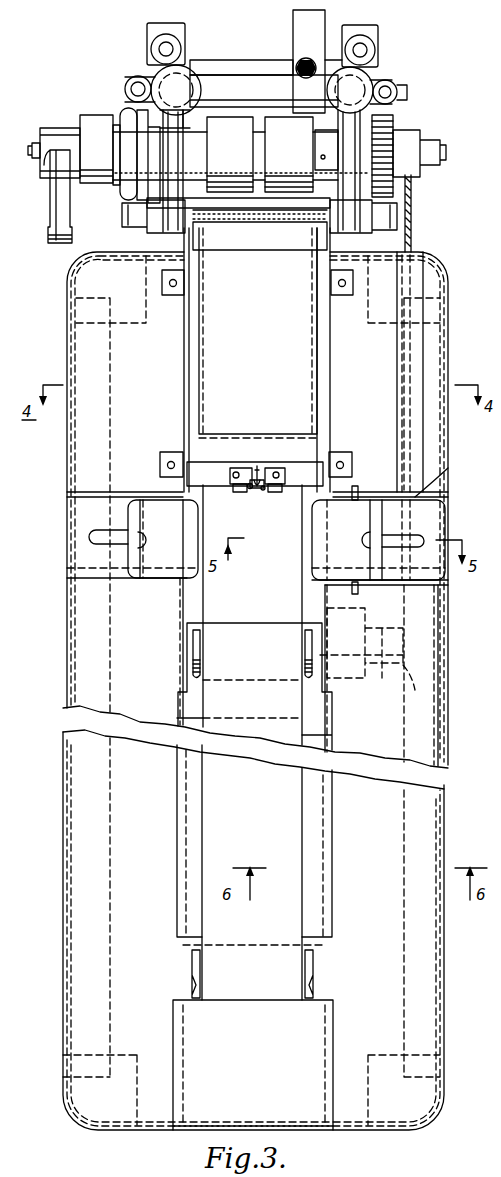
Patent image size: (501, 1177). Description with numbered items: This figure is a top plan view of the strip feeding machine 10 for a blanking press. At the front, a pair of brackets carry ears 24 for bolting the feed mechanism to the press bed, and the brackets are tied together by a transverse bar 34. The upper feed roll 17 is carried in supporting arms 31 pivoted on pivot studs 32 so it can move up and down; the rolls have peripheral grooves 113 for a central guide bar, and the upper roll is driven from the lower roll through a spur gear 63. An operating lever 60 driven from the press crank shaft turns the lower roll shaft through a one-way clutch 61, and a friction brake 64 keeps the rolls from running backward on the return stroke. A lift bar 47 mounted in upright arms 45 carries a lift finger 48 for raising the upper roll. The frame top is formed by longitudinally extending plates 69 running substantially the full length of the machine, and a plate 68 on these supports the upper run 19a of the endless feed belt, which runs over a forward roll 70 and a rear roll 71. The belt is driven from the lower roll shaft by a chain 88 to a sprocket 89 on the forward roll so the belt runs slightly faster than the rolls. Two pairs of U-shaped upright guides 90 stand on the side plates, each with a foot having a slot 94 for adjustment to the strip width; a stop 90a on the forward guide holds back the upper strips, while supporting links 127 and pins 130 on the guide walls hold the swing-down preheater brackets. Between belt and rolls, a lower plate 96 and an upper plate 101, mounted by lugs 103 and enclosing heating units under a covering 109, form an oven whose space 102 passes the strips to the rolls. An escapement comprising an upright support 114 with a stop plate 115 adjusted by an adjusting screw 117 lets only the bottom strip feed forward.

The housing 10 is at (61, 979).
The upper feed roll 17 is at (232, 118).
The upper run of the belt 19a is at (292, 818).
The ears or lugs 24 is at (146, 40).
The supporting arms 31 is at (186, 165).
The pivot studs 32 is at (120, 229).
The transverse bar 34 is at (262, 220).
The eccentric 45 is at (202, 92).
The lift bar 47 is at (214, 80).
The lift finger 48 is at (295, 38).
The operating lever 60 is at (52, 208).
The one-way clutch 61 is at (110, 192).
The spur gear 63 is at (395, 118).
The friction brake 64 is at (120, 158).
The plate 68 is at (188, 862).
The longitudinally extending plates 69 is at (75, 862).
The forward roll 70 is at (312, 688).
The roll 71 is at (313, 968).
The chain 88 is at (412, 190).
The sprocket 89 is at (405, 690).
The upright guides 90 is at (200, 545).
The upright stop 90a is at (225, 482).
The slot 94 is at (88, 536).
The plate 96 is at (492, 517).
The upper plate 101 is at (250, 58).
The space 102 is at (489, 484).
The lugs 103 is at (172, 296).
The covering 109 is at (300, 393).
The peripheral grooves 113 is at (263, 118).
The upright support 114 is at (300, 484).
The stop plate 115 is at (238, 492).
The adjusting screw 117 is at (257, 460).
The supporting links 127 is at (138, 492).
The pins 130 is at (376, 470).